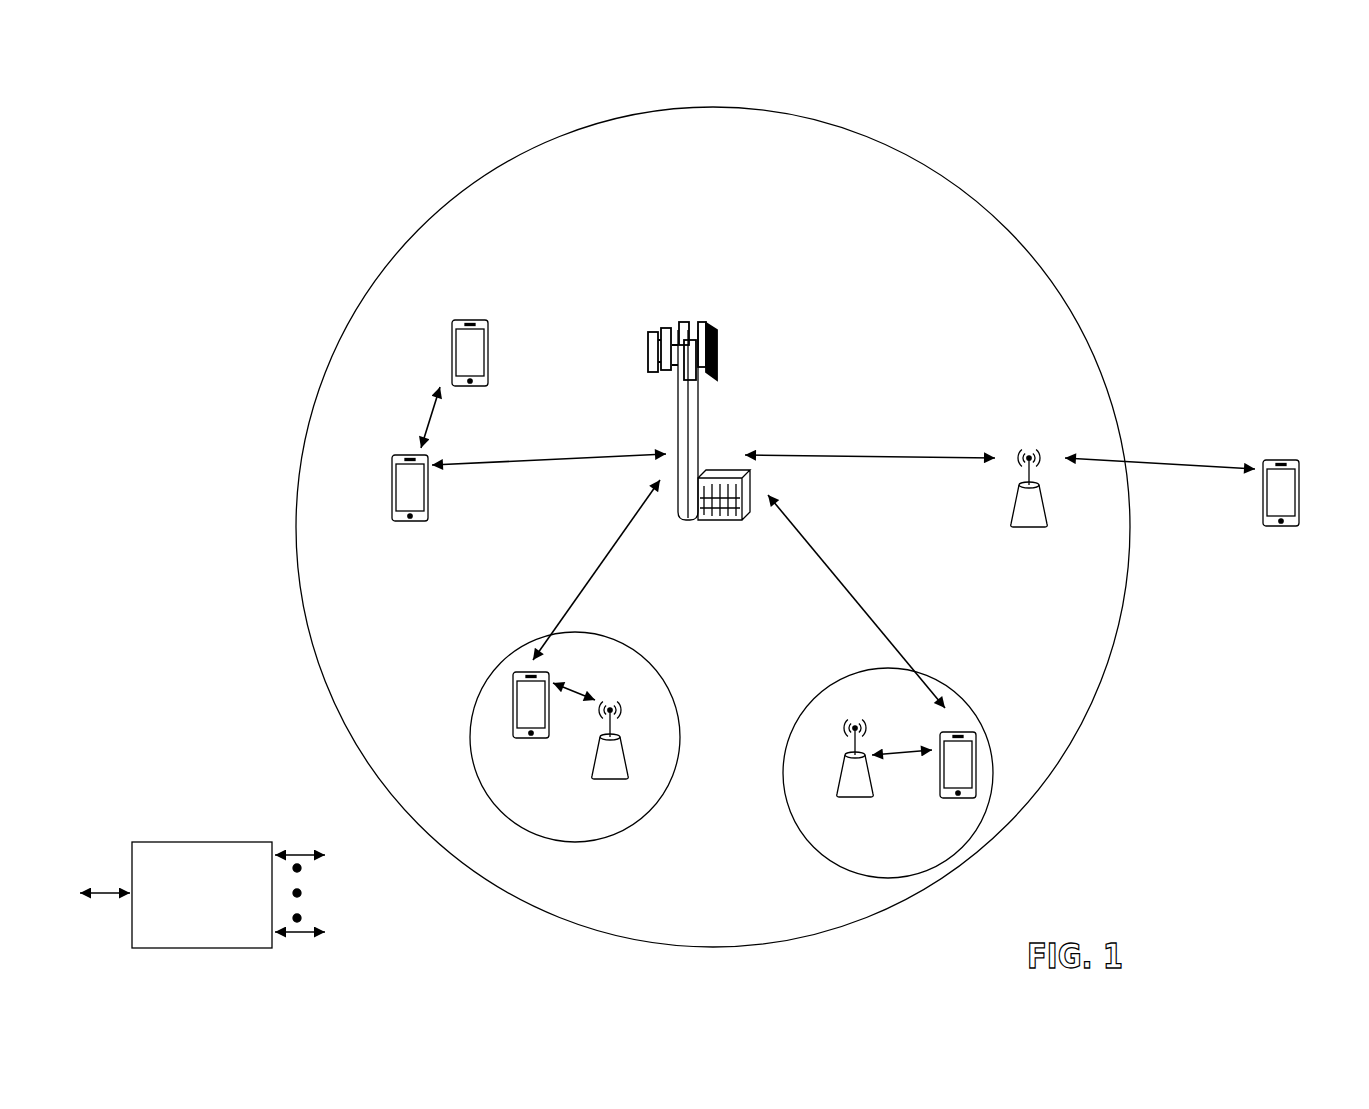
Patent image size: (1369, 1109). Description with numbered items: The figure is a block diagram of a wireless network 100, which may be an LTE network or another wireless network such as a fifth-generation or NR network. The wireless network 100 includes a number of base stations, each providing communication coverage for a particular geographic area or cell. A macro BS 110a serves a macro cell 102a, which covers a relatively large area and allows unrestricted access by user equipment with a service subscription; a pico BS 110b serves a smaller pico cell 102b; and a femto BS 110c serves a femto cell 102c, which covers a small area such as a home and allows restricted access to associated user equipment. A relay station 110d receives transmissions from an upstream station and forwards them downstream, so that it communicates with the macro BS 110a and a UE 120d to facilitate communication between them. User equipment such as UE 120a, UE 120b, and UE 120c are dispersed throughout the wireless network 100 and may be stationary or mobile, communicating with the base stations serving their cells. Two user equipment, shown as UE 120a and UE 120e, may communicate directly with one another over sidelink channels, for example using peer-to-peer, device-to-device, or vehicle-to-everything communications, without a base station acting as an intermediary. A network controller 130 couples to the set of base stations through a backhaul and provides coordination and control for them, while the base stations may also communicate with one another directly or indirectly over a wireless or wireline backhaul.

The wireless network 100 is at (186, 104).
The macro cell 102a is at (993, 214).
The pico cell 102b is at (668, 681).
The femto cell 102c is at (826, 685).
The macro BS 110a is at (717, 318).
The pico BS 110b is at (628, 772).
The femto BS 110c is at (838, 786).
The relay station 110d is at (1029, 450).
The UE 120a is at (392, 486).
The UE 120b is at (515, 739).
The UE 120c is at (942, 799).
The UE 120d is at (1294, 459).
The UE 120e is at (452, 340).
The network controller 130 is at (198, 842).